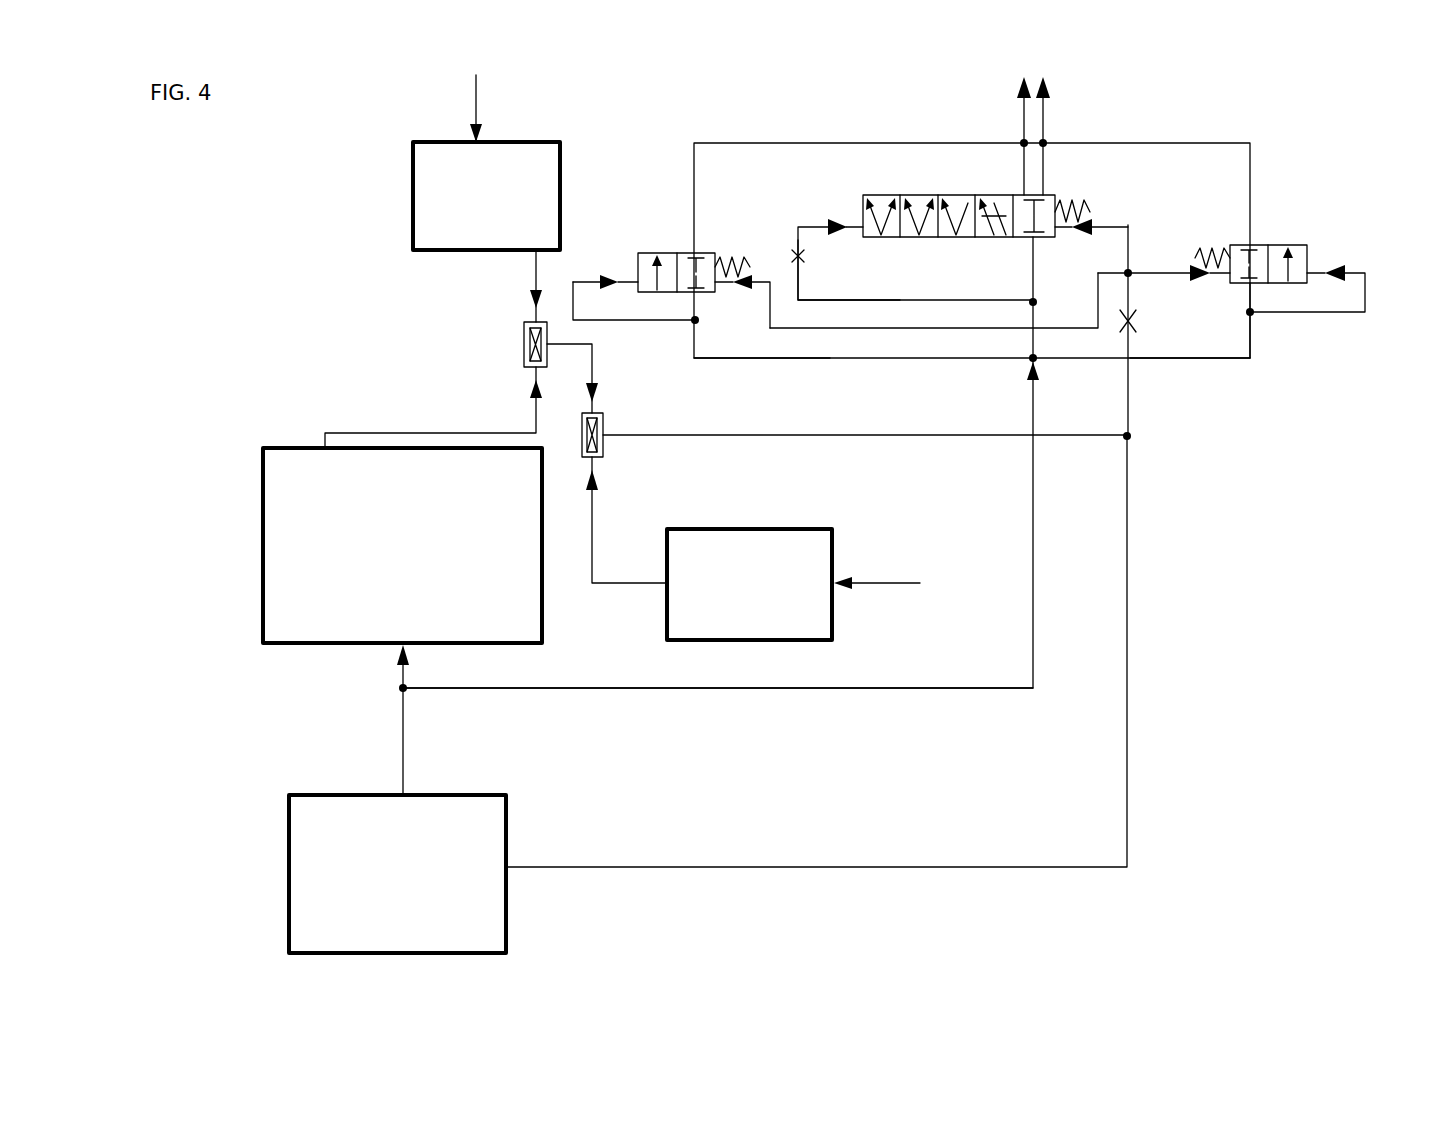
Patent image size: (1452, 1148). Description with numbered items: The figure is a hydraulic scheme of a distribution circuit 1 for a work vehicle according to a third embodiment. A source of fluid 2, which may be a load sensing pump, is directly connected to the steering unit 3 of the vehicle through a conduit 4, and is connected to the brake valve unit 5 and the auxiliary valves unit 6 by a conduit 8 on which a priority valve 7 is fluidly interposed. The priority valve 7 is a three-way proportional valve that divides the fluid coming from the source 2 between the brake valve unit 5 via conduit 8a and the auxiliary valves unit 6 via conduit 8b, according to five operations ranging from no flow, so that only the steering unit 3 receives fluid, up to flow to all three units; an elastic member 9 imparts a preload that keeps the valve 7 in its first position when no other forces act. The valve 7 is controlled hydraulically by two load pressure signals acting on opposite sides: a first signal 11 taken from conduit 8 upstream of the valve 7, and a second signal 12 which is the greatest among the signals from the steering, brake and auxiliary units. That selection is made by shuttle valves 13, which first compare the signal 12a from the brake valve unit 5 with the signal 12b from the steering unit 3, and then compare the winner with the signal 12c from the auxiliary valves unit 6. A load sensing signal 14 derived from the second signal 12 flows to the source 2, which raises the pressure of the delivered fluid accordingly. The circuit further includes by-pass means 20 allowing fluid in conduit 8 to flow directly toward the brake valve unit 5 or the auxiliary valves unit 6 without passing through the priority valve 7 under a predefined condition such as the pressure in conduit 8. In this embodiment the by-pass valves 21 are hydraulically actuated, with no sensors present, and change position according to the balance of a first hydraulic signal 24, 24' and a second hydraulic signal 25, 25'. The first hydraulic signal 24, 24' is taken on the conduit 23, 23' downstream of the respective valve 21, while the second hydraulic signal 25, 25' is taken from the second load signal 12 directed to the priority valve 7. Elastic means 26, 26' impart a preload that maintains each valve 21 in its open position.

The distribution circuit 1 is at (1325, 473).
The source of fluid 2 is at (323, 826).
The steering unit 3 is at (265, 500).
The conduit 4 is at (407, 728).
The brake valve unit 5 is at (527, 153).
The auxiliary valves unit 6 is at (755, 542).
The priority valve 7 is at (951, 195).
The conduit 8 is at (897, 690).
The conduit 8a is at (1017, 102).
The conduit 8b is at (1050, 102).
The elastic member 9 is at (1086, 200).
The first signal 11 is at (915, 300).
The second signal 12 is at (1167, 277).
The signal 12a is at (530, 263).
The signal 12b is at (467, 385).
The signal 12c is at (593, 525).
The shuttle valve 13 is at (524, 332).
The signal 14 is at (1130, 643).
The by-pass means 20 is at (657, 252).
The valve 21 is at (667, 253).
The conduit 23 is at (1190, 385).
The conduit 23' is at (762, 382).
The first hydraulic signal 24 is at (1308, 314).
The first hydraulic signal 24' is at (630, 257).
The second hydraulic signal 25 is at (1162, 309).
The second hydraulic signal 25' is at (934, 335).
The elastic means 26 is at (1217, 219).
The elastic means 26' is at (736, 235).